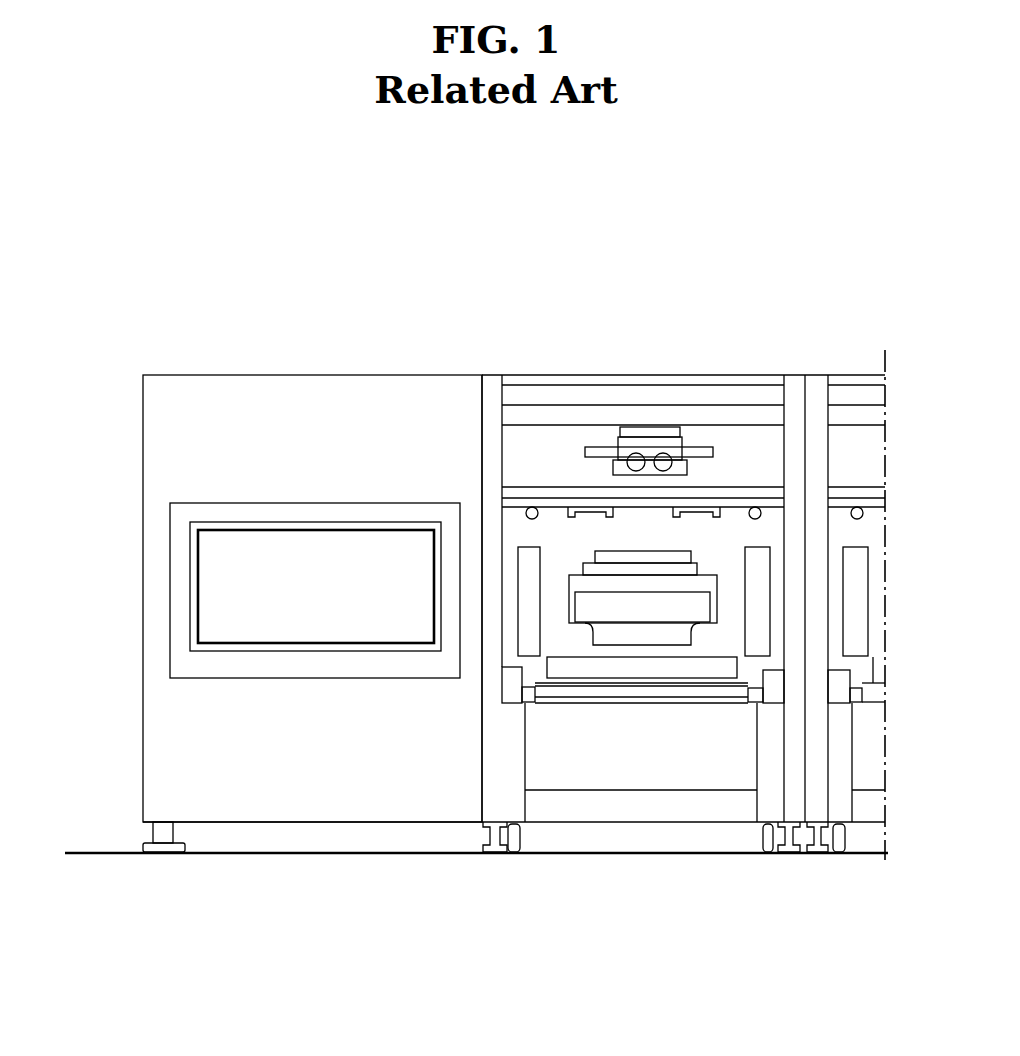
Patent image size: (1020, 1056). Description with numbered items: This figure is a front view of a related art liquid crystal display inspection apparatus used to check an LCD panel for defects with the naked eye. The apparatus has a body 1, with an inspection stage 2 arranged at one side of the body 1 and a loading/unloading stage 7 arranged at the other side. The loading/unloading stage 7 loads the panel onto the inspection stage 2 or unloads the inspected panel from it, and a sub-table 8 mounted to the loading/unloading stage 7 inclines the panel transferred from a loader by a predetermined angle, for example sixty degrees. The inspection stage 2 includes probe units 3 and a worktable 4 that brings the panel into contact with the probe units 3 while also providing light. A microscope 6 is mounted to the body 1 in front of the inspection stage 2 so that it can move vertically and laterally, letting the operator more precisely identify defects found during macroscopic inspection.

The body 1 is at (522, 380).
The inspection stage 2 is at (598, 372).
The probe units 3 is at (525, 627).
The worktable 4 is at (638, 623).
The microscope 6 is at (650, 437).
The loading/unloading stage 7 is at (322, 412).
The sub-table 8 is at (213, 594).